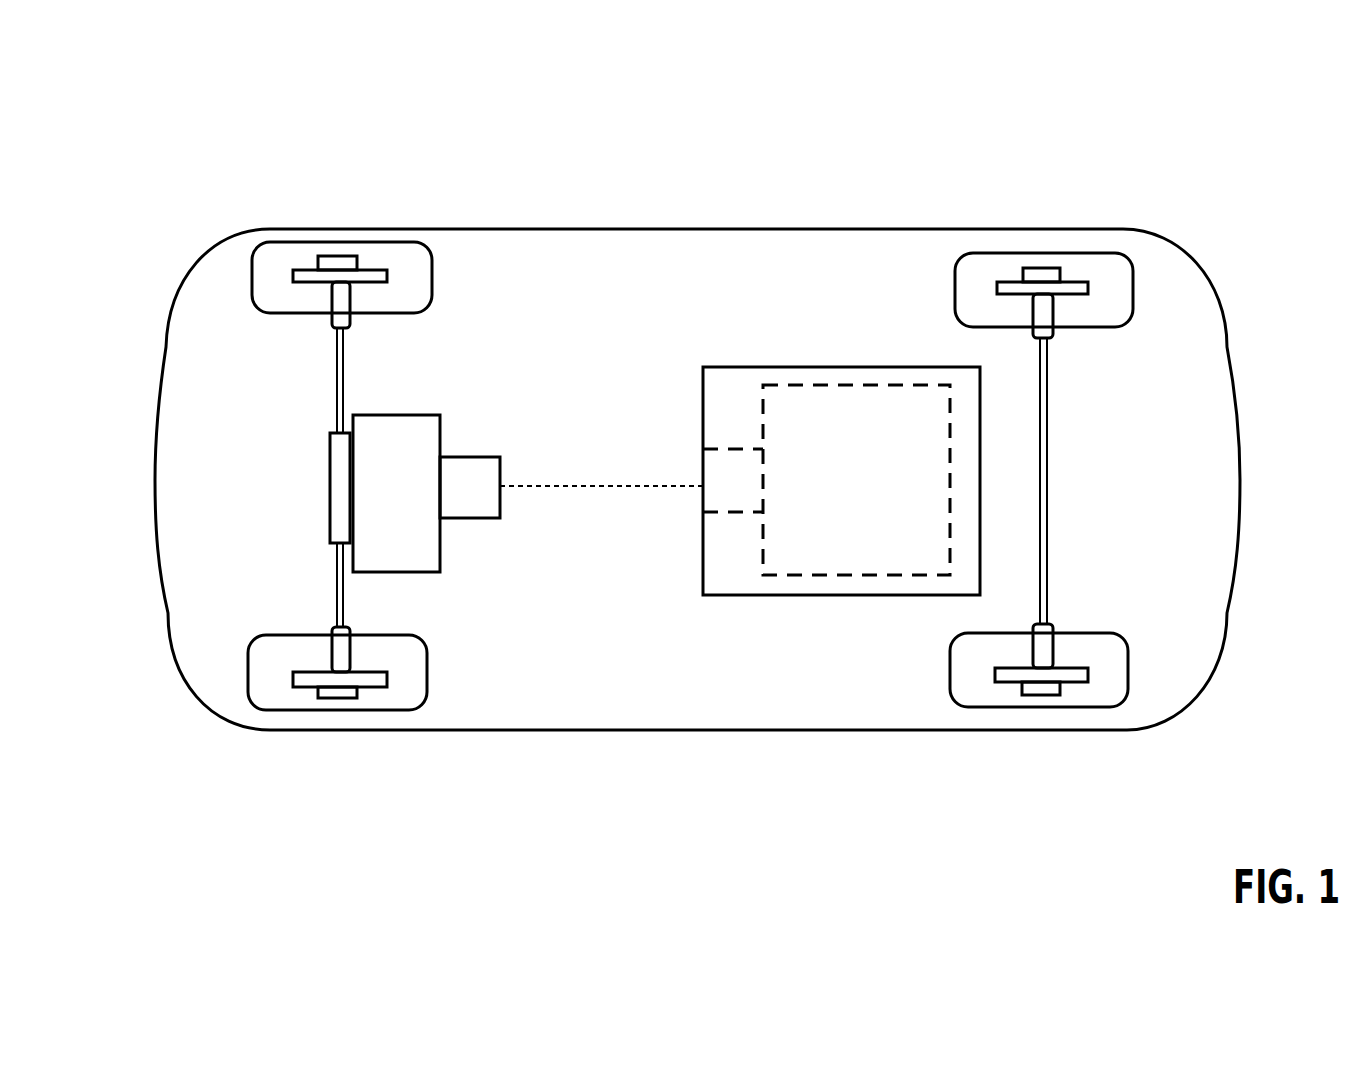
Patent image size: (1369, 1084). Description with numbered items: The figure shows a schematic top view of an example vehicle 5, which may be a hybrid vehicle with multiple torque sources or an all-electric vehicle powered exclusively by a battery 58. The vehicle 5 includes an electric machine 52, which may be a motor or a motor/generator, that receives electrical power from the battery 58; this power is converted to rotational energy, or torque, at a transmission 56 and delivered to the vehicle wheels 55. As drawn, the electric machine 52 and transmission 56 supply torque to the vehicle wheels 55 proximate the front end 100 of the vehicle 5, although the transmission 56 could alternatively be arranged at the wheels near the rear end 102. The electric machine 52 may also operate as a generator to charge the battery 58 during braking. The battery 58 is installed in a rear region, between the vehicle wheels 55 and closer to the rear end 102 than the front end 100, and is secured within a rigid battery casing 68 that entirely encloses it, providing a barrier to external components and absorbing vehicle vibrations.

The vehicle 5 is at (762, 152).
The electric machine 52 is at (462, 473).
The vehicle wheels 55 is at (397, 270).
The transmission 56 is at (383, 443).
The battery 58 is at (848, 428).
The battery casing 68 is at (715, 595).
The front end 100 is at (112, 483).
The rear end 102 is at (1292, 440).